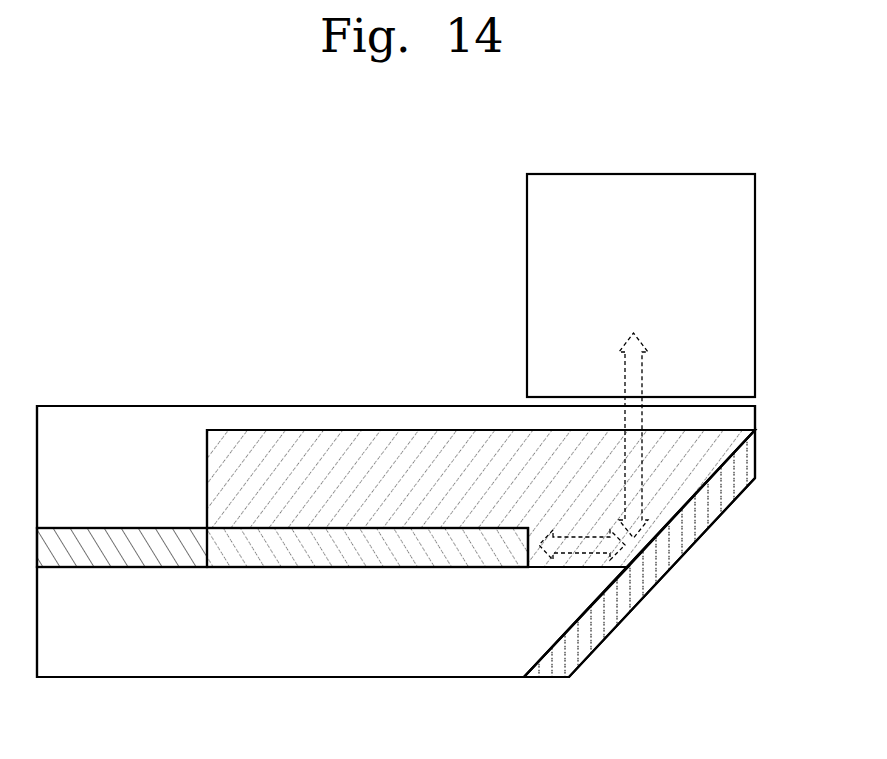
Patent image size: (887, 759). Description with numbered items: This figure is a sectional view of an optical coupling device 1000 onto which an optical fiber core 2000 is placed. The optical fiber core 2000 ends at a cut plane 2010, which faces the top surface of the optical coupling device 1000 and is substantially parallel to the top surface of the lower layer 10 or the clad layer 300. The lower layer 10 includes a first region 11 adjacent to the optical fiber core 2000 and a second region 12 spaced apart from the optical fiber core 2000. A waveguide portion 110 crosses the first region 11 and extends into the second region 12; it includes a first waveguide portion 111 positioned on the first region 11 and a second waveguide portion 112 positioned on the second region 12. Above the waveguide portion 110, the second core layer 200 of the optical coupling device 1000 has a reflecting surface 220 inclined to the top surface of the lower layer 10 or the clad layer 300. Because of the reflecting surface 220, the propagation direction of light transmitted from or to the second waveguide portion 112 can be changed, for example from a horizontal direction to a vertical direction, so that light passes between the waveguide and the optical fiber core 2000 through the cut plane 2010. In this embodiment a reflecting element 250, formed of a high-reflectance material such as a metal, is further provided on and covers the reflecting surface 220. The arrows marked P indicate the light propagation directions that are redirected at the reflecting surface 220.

The optical coupling device 1000 is at (798, 405).
The optical fiber core 2000 is at (537, 262).
The cut plane 2010 is at (533, 399).
The clad layer 300 is at (138, 489).
The second core layer 200 is at (440, 489).
The reflecting surface 220 is at (688, 491).
The reflecting element 250 is at (643, 582).
The waveguide portion 110 is at (332, 599).
The first waveguide portion 111 is at (138, 556).
The second waveguide portion 112 is at (367, 578).
The lower layer 10 is at (423, 638).
The first region 11 is at (208, 692).
The second region 12 is at (755, 692).
The pressure P is at (642, 338).